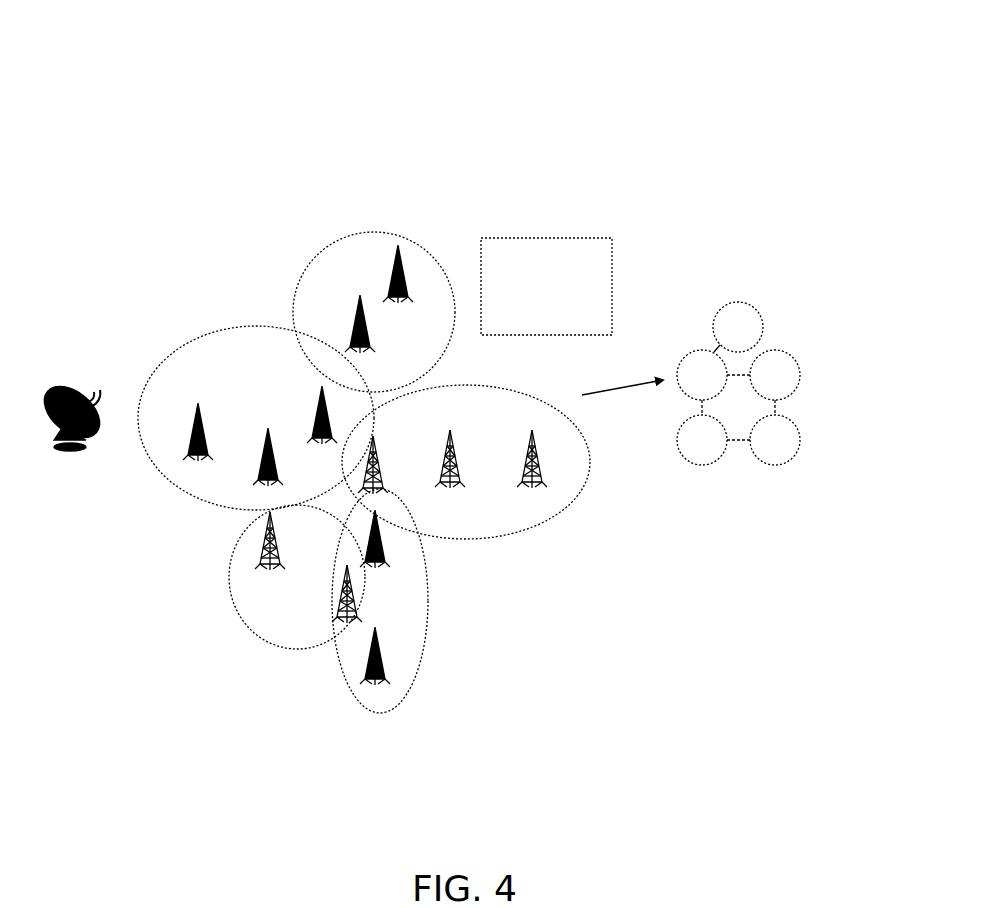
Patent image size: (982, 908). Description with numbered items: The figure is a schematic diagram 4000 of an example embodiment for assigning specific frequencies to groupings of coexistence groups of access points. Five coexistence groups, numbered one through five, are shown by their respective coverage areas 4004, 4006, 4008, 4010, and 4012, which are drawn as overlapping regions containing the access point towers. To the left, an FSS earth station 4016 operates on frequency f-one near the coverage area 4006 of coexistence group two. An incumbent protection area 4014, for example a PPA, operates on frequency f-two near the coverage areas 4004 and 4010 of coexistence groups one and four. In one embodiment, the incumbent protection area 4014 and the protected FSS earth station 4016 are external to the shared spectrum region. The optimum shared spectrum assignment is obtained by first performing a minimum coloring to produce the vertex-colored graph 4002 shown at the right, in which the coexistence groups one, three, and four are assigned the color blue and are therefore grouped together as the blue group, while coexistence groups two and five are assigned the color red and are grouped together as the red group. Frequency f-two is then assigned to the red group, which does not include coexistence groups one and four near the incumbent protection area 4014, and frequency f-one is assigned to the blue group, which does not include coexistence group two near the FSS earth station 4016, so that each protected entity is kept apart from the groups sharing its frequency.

The schematic diagram 4000 is at (200, 80).
The vertex-colored graph 4002 is at (812, 372).
The coverage area of coexistence group 1 4004 is at (332, 243).
The coverage area of coexistence group 2 4006 is at (222, 329).
The coverage area of coexistence group 3 4008 is at (242, 572).
The coverage area of coexistence group 4 4010 is at (520, 392).
The coverage area of coexistence group 5 4012 is at (428, 610).
The incumbent protection area 4014 is at (546, 286).
The FSS earth station 4016 is at (55, 386).